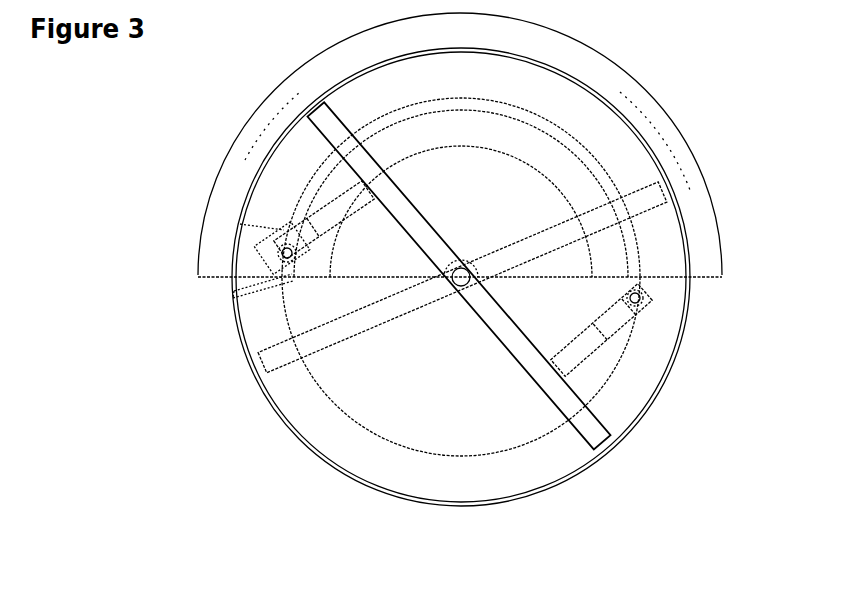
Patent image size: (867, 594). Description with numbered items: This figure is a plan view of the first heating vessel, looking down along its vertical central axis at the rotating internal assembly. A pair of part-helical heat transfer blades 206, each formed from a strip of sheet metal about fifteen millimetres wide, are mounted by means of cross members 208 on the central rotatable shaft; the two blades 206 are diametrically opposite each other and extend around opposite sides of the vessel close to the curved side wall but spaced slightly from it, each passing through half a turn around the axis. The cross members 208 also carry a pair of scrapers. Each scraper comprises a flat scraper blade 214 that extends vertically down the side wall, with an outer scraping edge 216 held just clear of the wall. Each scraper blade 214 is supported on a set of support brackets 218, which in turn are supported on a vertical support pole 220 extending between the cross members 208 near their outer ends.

The part-helical heat transfer blade 206 is at (262, 323).
The cross member 208 is at (563, 400).
The scraper blade 214 is at (265, 288).
The outer scraping edge 216 is at (262, 287).
The support bracket 218 is at (265, 267).
The vertical support pole 220 is at (281, 256).